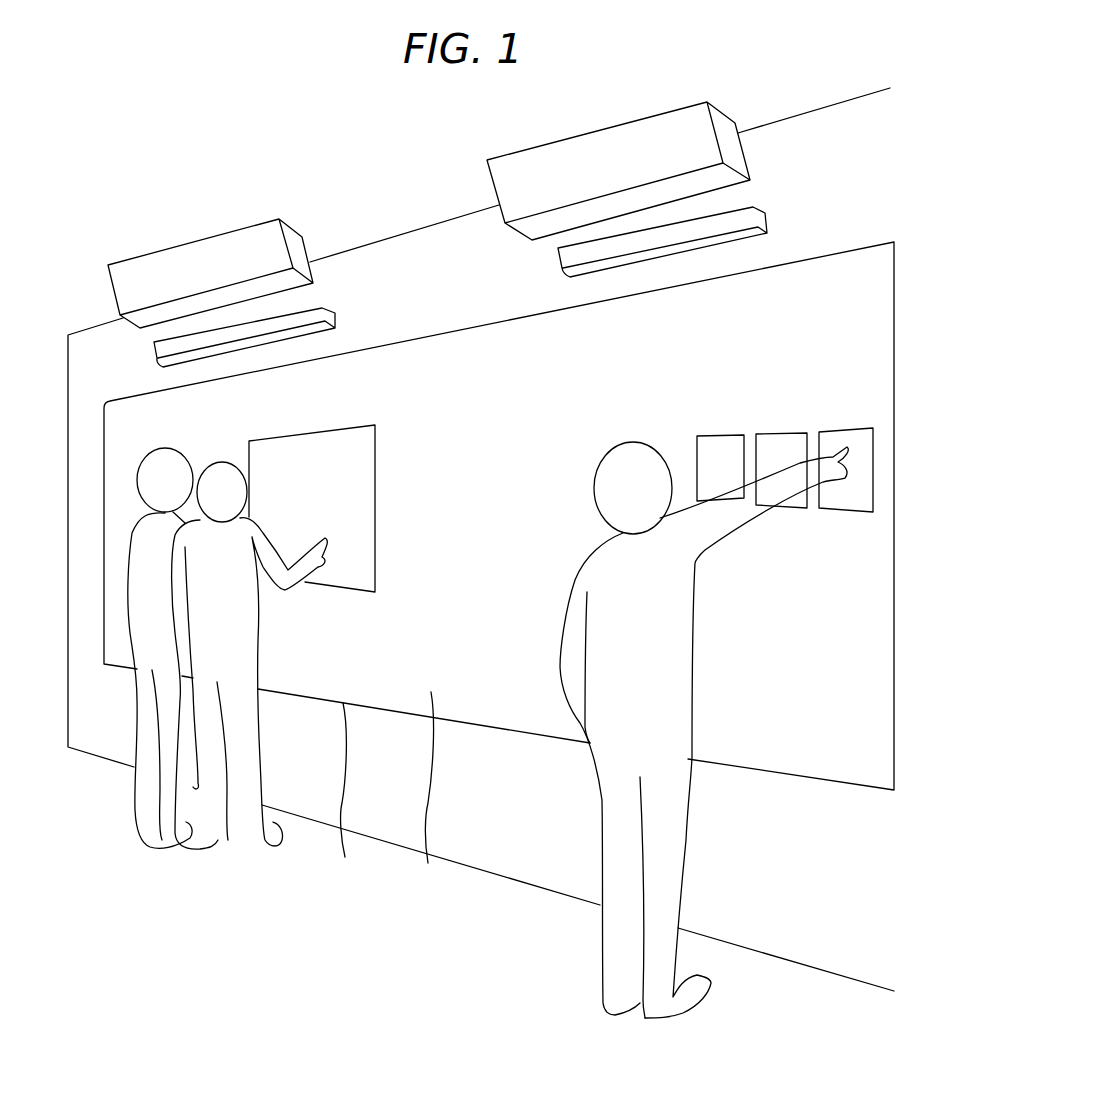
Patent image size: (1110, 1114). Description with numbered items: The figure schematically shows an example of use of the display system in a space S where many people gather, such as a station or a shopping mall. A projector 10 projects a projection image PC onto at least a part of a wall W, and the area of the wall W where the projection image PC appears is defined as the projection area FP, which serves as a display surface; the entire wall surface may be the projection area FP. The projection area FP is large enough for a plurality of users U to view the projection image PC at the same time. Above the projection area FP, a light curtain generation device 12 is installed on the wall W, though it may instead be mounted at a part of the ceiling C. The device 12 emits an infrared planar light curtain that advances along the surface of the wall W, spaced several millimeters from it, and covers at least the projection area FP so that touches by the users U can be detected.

The projector 10 is at (115, 292).
The light curtain generation device 12 is at (163, 357).
The ceiling C is at (366, 232).
The space S is at (861, 182).
The wall W is at (85, 421).
The user U is at (148, 822).
The projection area FP is at (346, 802).
The projection image PC is at (431, 797).